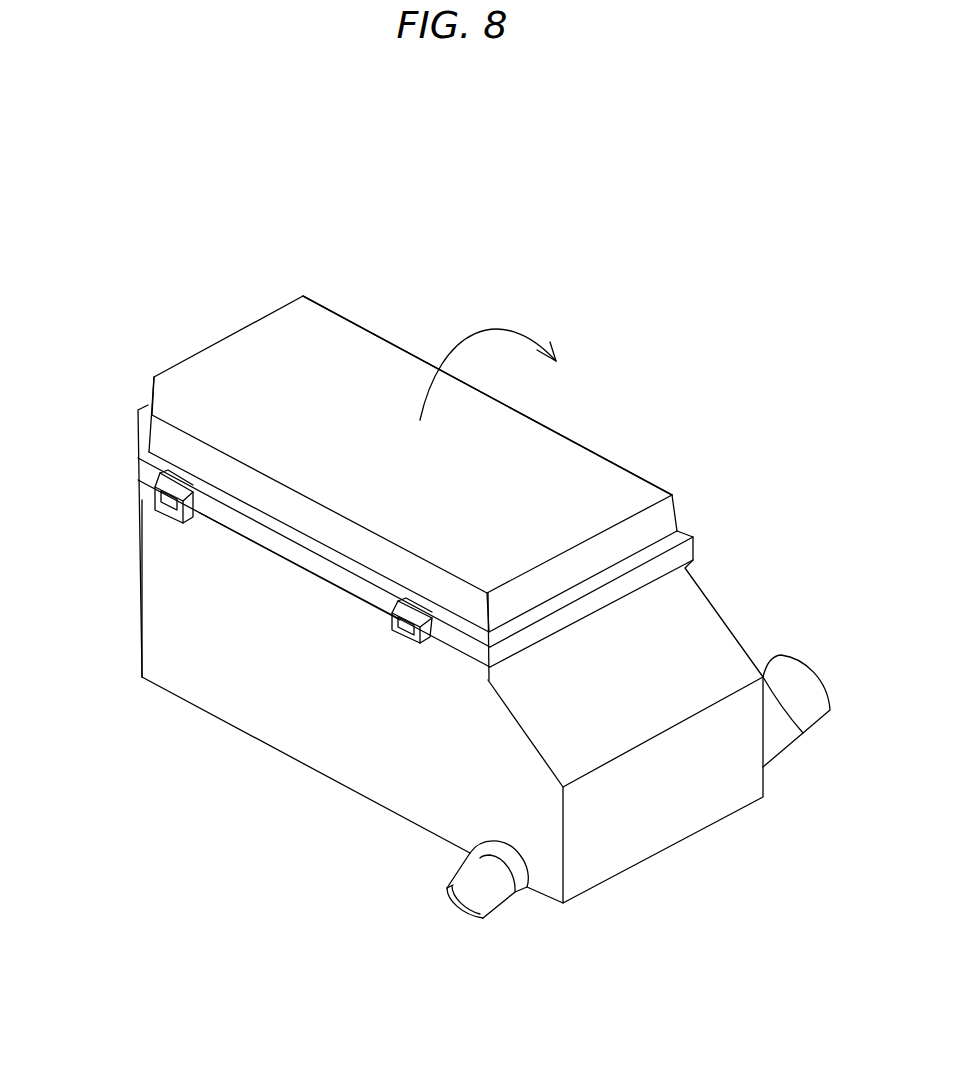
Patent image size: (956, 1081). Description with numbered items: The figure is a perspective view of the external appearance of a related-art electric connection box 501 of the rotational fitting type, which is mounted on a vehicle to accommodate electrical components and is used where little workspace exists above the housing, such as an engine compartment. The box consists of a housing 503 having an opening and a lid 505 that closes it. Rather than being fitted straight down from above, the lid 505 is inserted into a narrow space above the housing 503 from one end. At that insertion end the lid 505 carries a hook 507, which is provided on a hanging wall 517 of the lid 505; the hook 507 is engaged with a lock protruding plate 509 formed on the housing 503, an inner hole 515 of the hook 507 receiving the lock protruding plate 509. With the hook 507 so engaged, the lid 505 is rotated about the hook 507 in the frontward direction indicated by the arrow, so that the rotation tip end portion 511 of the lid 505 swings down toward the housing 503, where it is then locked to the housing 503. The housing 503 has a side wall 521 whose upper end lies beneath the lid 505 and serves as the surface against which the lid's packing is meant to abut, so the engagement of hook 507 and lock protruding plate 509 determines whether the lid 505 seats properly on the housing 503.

The electric connection box 501 is at (435, 544).
The housing 503 is at (435, 661).
The lid 505 is at (420, 429).
The hook 507 is at (239, 601).
The lock protruding plate 509 is at (168, 497).
The rotation tip end portion 511 is at (594, 447).
The inner hole 515 is at (181, 478).
The hanging wall 517 is at (287, 547).
The side wall 521 is at (180, 621).